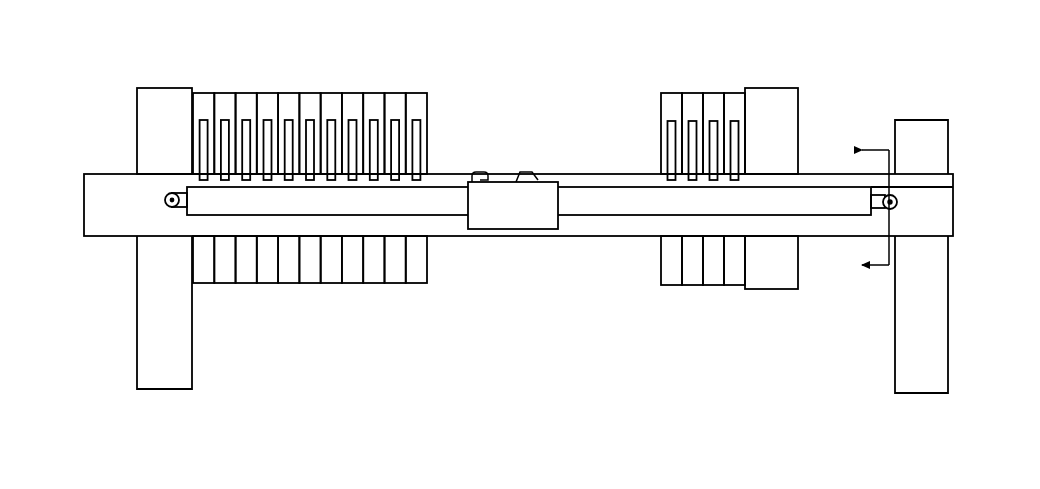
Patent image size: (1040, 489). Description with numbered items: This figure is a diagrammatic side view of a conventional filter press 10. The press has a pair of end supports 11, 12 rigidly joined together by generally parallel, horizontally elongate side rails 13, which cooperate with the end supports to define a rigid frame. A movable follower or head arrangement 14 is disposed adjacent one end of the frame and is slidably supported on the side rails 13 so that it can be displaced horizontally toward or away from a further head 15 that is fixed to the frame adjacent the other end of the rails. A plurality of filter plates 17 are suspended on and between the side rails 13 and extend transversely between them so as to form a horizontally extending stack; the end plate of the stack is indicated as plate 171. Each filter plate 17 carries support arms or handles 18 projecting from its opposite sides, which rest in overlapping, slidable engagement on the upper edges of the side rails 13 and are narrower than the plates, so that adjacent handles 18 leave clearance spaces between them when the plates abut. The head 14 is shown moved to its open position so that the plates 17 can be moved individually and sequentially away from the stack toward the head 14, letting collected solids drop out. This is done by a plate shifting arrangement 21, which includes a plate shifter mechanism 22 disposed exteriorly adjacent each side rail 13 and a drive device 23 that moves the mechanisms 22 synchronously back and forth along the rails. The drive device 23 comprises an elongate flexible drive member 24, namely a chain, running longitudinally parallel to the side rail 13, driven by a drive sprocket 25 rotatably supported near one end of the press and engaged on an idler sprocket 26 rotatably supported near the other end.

The filter press 10 is at (867, 56).
The end support 11 is at (937, 296).
The end support 12 is at (148, 320).
The side rail 13 is at (948, 183).
The movable follower or head arrangement 14 is at (787, 117).
The fixed head 15 is at (138, 113).
The filter plate 17 is at (418, 100).
The end filter plate 171 is at (738, 100).
The support arm or handle 18 is at (413, 144).
The plate shifting arrangement 21 is at (615, 262).
The plate shifter mechanism 22 is at (521, 208).
The drive device 23 is at (884, 214).
The elongate flexible drive member 24 is at (882, 176).
The drive sprocket 25 is at (897, 206).
The idler sprocket 26 is at (165, 200).